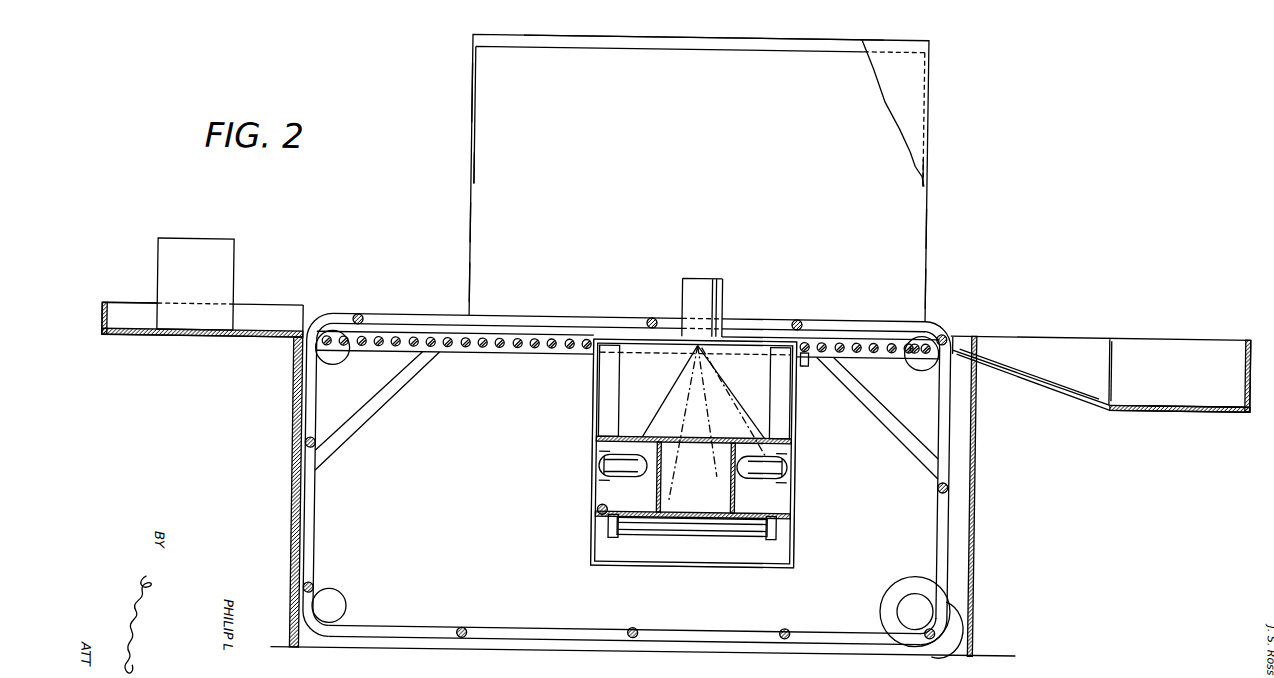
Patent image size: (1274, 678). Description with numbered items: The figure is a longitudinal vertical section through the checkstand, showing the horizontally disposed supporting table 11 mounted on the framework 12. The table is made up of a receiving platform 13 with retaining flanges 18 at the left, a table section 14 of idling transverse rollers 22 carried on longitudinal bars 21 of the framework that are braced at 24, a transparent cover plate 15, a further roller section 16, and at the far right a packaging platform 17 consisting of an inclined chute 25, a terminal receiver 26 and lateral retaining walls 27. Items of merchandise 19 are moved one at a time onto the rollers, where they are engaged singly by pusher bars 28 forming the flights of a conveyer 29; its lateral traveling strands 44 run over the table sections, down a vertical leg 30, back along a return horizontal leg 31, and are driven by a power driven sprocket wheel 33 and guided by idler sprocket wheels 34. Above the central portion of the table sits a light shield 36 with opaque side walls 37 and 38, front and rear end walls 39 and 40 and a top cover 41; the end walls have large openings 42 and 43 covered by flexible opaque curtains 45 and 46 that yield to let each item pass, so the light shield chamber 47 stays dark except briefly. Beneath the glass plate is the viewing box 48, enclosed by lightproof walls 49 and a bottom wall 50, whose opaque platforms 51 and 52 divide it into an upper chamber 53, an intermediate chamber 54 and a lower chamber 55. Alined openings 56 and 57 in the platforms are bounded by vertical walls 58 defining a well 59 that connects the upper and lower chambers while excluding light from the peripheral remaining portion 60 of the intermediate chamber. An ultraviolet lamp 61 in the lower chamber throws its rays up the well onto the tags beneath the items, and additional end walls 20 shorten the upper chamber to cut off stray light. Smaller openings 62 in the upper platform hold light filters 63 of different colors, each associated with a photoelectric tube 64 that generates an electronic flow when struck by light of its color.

The supporting table 11 is at (379, 252).
The framework 12 is at (303, 540).
The receiving platform 13 is at (258, 310).
The table section 14 is at (628, 346).
The transparent cover plate 15 is at (742, 334).
The table section 16 is at (823, 353).
The packaging platform 17 is at (1100, 392).
The retaining flanges 18 is at (134, 312).
The items of merchandise 19 is at (206, 246).
The end walls 20 is at (620, 375).
The bars 21 is at (931, 351).
The idling transverse rollers 22 is at (566, 343).
The braces 24 is at (370, 419).
The inclined chute 25 is at (1070, 324).
The terminal receiver 26 is at (1210, 327).
The lateral retaining walls 27 is at (1147, 326).
The pusher bars 28 is at (360, 316).
The conveyer 29 is at (567, 316).
The vertical leg 30 is at (953, 527).
The return horizontal leg 31 is at (750, 635).
The power driven sprocket wheel 33 is at (899, 604).
The idler sprocket wheels 34 is at (341, 357).
The light shield 36 is at (962, 127).
The side wall 37 is at (892, 92).
The side wall 38 is at (500, 90).
The front end wall 39 is at (470, 160).
The rear end wall 40 is at (918, 163).
The top cover 41 is at (672, 35).
The opening 42 is at (476, 225).
The opening 43 is at (923, 217).
The lateral traveling strands 44 is at (785, 323).
The curtain 45 is at (475, 277).
The curtain 46 is at (927, 264).
The light shield chamber 47 is at (722, 154).
The viewing box 48 is at (810, 485).
The lightproof walls 49 is at (598, 410).
The bottom wall 50 is at (684, 565).
The platform 51 is at (798, 430).
The platform 52 is at (601, 532).
The upper chamber 53 is at (710, 397).
The intermediate chamber 54 is at (616, 446).
The lower chamber 55 is at (686, 558).
The opening 56 is at (695, 448).
The opening 57 is at (733, 532).
The vertical walls 58 is at (664, 474).
The well 59 is at (780, 470).
The peripheral remaining portion 60 is at (634, 494).
The ultraviolet lamp 61 is at (621, 532).
The smaller openings 62 is at (635, 437).
The light filters 63 is at (642, 432).
The photoelectric tube 64 is at (614, 474).